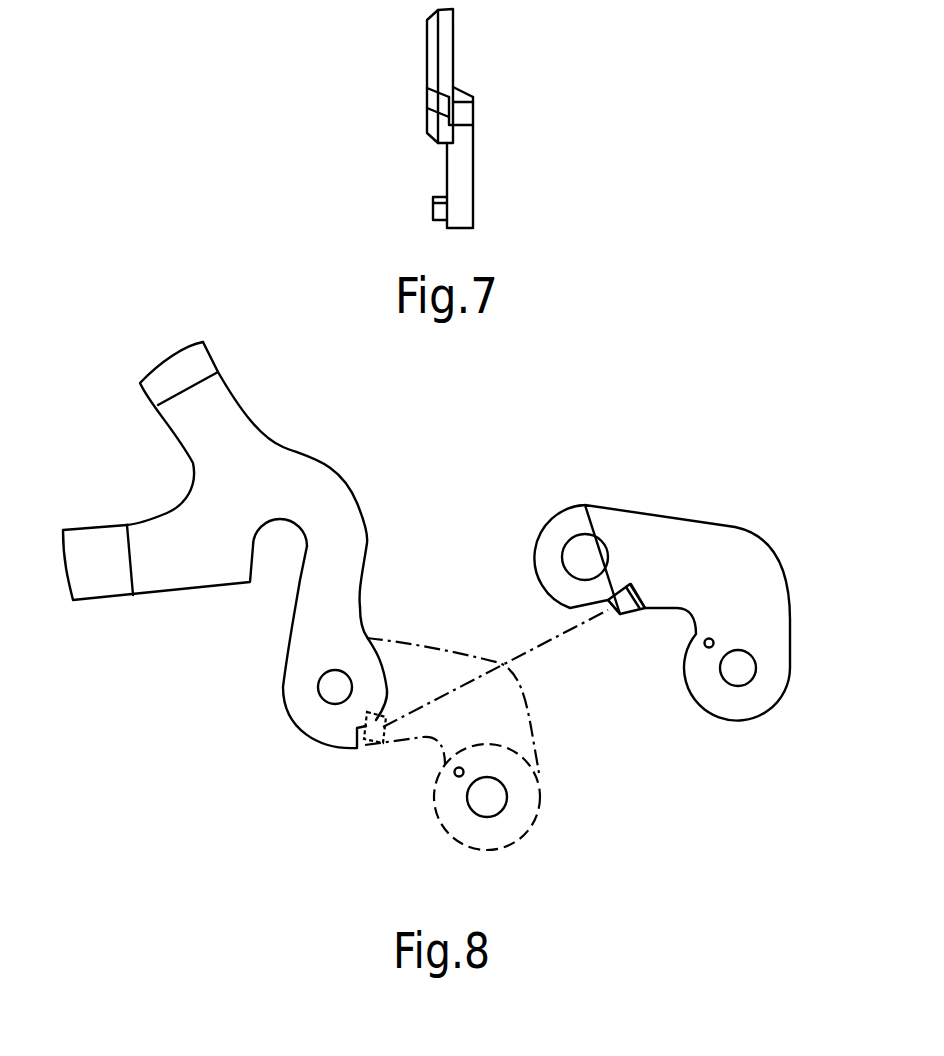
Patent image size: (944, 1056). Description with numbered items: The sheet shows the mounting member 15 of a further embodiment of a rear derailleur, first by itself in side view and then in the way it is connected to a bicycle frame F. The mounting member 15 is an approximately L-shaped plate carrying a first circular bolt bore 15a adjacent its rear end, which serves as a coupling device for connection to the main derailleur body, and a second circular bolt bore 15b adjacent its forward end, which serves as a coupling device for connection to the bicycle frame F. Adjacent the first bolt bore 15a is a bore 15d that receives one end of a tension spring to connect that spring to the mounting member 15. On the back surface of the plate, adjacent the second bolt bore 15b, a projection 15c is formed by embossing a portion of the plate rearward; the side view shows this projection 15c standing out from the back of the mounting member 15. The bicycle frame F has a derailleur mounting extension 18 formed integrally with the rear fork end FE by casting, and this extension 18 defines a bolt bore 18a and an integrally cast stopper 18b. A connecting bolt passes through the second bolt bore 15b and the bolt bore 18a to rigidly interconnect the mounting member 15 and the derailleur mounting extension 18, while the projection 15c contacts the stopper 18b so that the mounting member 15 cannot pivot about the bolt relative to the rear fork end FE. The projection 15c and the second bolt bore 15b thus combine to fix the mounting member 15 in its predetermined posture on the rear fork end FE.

In FIG. 7, the mounting member 15 is at (420, 77).
In FIG. 8, the mounting member 15 is at (686, 512).
In FIG. 8, the first circular bolt bore 15a is at (733, 680).
In FIG. 8, the second circular bolt bore 15b is at (567, 552).
In FIG. 7, the projection 15c is at (474, 114).
In FIG. 8, the projection 15c is at (620, 616).
In FIG. 8, the bore 15d is at (707, 637).
In FIG. 8, the derailleur mounting extension 18 is at (292, 685).
In FIG. 8, the bolt bore 18a is at (318, 687).
In FIG. 8, the stopper 18b is at (378, 750).
In FIG. 8, the bicycle frame F is at (98, 602).
In FIG. 8, the rear fork end FE is at (357, 488).